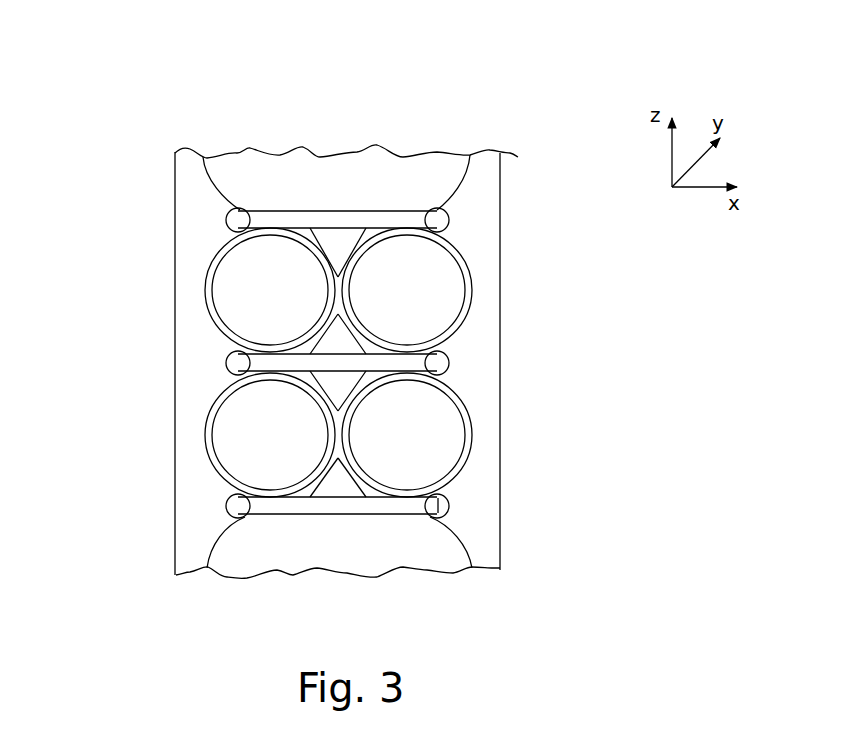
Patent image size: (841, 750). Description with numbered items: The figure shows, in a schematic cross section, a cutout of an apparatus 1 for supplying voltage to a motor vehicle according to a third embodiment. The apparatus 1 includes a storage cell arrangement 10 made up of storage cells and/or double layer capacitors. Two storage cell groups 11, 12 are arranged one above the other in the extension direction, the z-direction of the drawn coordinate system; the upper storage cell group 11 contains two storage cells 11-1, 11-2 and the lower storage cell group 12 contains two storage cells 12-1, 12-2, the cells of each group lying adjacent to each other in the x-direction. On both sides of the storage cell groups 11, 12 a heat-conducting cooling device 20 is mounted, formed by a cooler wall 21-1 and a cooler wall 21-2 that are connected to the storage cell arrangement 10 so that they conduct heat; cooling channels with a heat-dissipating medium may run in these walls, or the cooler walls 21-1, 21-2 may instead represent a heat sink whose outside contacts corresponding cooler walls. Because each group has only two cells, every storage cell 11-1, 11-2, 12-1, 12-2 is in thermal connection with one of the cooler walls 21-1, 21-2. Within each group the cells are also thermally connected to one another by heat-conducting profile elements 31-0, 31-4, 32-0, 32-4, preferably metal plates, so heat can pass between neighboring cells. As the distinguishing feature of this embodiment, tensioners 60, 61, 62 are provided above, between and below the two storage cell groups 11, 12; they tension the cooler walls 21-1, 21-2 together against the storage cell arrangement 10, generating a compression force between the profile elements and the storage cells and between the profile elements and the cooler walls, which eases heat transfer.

The apparatus for supplying voltage 1 is at (85, 522).
The storage cell arrangement 10 is at (493, 97).
The storage cell group 11 is at (260, 290).
The storage cell 11-1 is at (296, 301).
The storage cell 11-2 is at (433, 301).
The storage cell group 12 is at (260, 435).
The storage cell 12-1 is at (296, 446).
The storage cell 12-2 is at (433, 446).
The heat-conducting cooling device 20 is at (492, 208).
The cooler wall 21-1 is at (187, 193).
The cooler wall 21-2 is at (488, 303).
The profile element 31-0 is at (303, 231).
The profile element 31-4 is at (352, 256).
The profile element 32-0 is at (340, 446).
The profile element 32-4 is at (344, 450).
The tensioner 60 is at (275, 211).
The tensioner 61 is at (449, 360).
The tensioner 62 is at (449, 504).